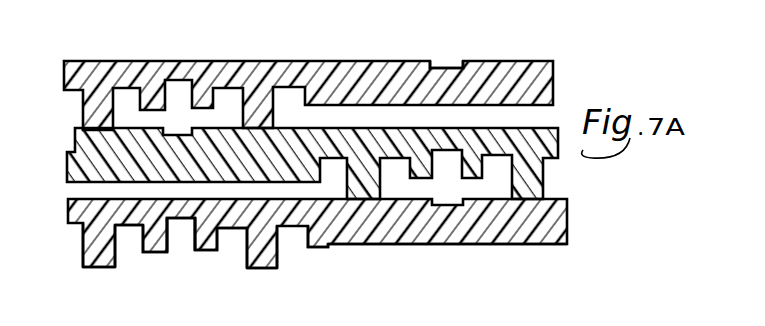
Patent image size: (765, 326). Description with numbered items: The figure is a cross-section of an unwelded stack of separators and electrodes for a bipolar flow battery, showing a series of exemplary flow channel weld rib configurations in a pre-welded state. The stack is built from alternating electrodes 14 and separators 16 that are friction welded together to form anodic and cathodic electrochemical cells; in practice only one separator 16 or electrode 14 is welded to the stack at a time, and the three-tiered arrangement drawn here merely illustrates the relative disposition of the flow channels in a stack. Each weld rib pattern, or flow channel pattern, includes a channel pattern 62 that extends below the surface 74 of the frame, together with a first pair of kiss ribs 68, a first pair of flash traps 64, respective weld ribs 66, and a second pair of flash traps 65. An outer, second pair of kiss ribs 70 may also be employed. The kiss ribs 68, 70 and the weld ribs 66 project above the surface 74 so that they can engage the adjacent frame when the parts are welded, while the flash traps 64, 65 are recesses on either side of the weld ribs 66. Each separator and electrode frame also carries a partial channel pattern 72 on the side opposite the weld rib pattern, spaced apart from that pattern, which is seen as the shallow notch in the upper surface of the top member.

The electrode 14 is at (566, 87).
The separator 16 is at (548, 161).
The channel pattern 62 is at (183, 235).
The first pair of flash traps 64 is at (130, 242).
The second pair of flash traps 65 is at (78, 238).
The weld ribs 66 is at (97, 268).
The first pair of kiss ribs 68 is at (158, 248).
The second pair of kiss ribs 70 is at (318, 249).
The partial channel pattern 72 is at (452, 66).
The surface 74 is at (490, 245).